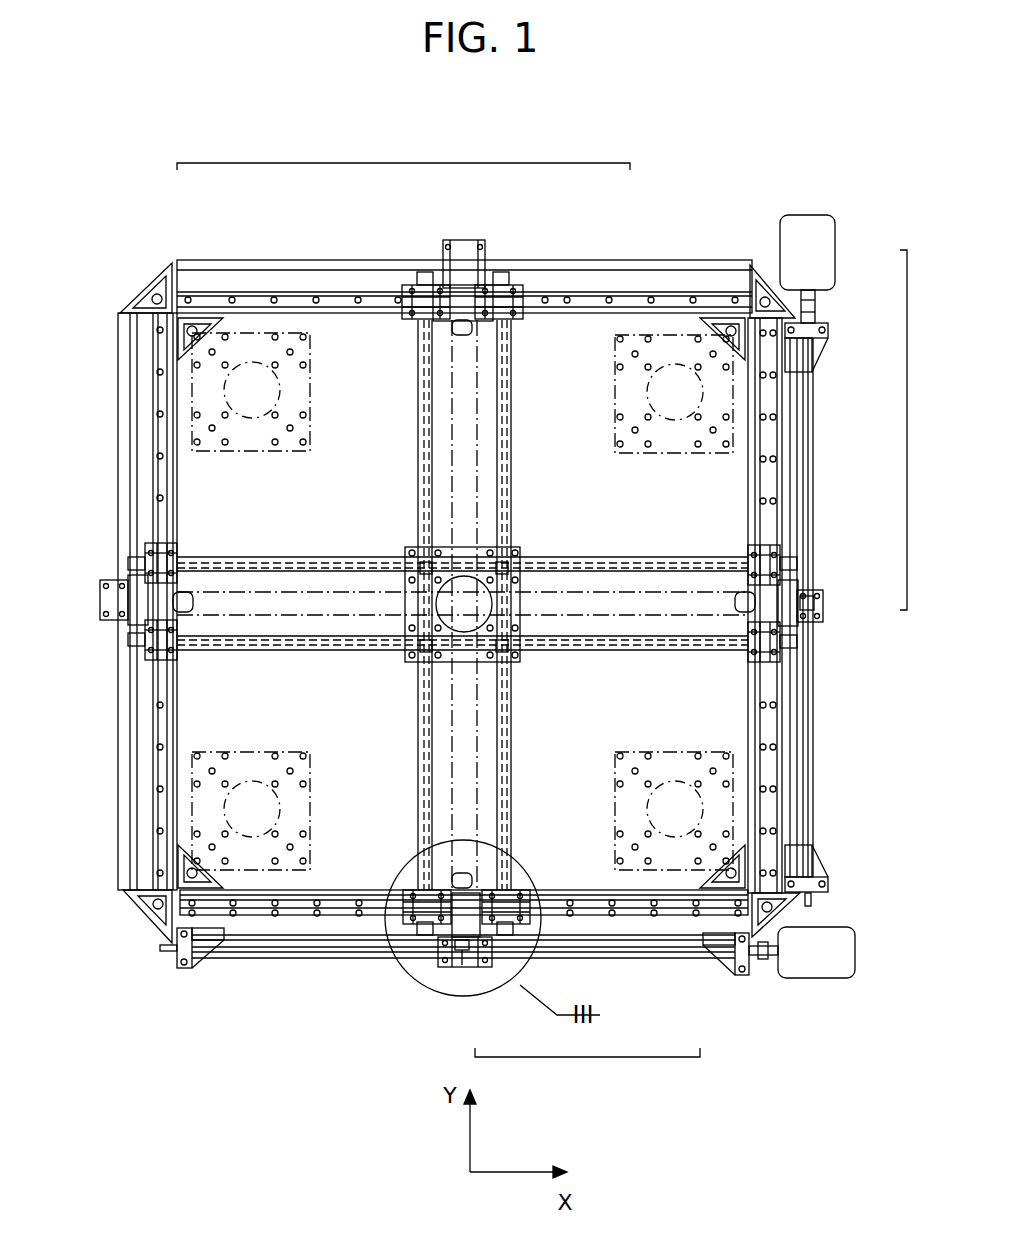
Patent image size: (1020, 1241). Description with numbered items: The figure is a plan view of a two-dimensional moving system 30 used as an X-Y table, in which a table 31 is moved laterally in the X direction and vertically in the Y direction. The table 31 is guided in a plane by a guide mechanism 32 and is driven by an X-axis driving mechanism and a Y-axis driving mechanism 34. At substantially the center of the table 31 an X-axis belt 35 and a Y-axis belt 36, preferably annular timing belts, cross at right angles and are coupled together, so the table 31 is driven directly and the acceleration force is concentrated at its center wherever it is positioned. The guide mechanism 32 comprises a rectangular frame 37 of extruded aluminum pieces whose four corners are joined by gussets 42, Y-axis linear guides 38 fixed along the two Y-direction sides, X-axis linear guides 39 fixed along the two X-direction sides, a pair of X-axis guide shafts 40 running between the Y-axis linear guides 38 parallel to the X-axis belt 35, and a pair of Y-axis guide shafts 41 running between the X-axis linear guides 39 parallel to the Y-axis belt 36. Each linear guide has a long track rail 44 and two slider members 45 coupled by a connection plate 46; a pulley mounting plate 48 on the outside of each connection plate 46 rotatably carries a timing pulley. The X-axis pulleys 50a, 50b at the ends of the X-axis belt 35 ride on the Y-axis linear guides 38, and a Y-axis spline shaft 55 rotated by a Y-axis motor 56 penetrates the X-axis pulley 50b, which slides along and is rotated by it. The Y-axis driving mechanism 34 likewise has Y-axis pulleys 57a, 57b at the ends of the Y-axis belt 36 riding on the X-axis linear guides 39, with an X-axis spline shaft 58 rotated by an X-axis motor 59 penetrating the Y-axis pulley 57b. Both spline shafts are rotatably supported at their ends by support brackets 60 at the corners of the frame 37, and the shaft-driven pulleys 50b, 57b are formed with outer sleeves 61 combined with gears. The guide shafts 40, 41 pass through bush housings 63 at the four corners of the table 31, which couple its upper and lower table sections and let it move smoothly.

The positioning apparatus 30 is at (921, 430).
The table 31 is at (468, 547).
The guide mechanism 32 is at (403, 153).
The Y-axis driving mechanism 34 is at (587, 1073).
The X-axis belt 35 is at (585, 600).
The Y-axis belt 36 is at (470, 455).
The frame 37 is at (352, 290).
The Y-axis linear guide 38 is at (160, 380).
The X-axis linear guide 39 is at (322, 907).
The X-axis guide shaft 40 is at (283, 640).
The Y-axis guide shaft 41 is at (415, 360).
The gusset 42 is at (150, 292).
The track rail 44 is at (348, 305).
The slider member 45 is at (405, 285).
The connection plate 46 is at (470, 290).
The pulley mounting plate 48 is at (428, 290).
The X-axis pulley 50a is at (110, 598).
The X-axis pulley 50b is at (815, 603).
The Y-axis spline shaft 55 is at (813, 492).
The Y-axis motor 56 is at (833, 268).
The Y-axis pulley 57a is at (462, 260).
The Y-axis pulley 57b is at (462, 968).
The X-axis spline shaft 58 is at (700, 960).
The X-axis motor 59 is at (815, 978).
The support bracket 60 is at (815, 330).
The outer sleeve 61 is at (458, 950).
The bush housing 63 is at (420, 562).